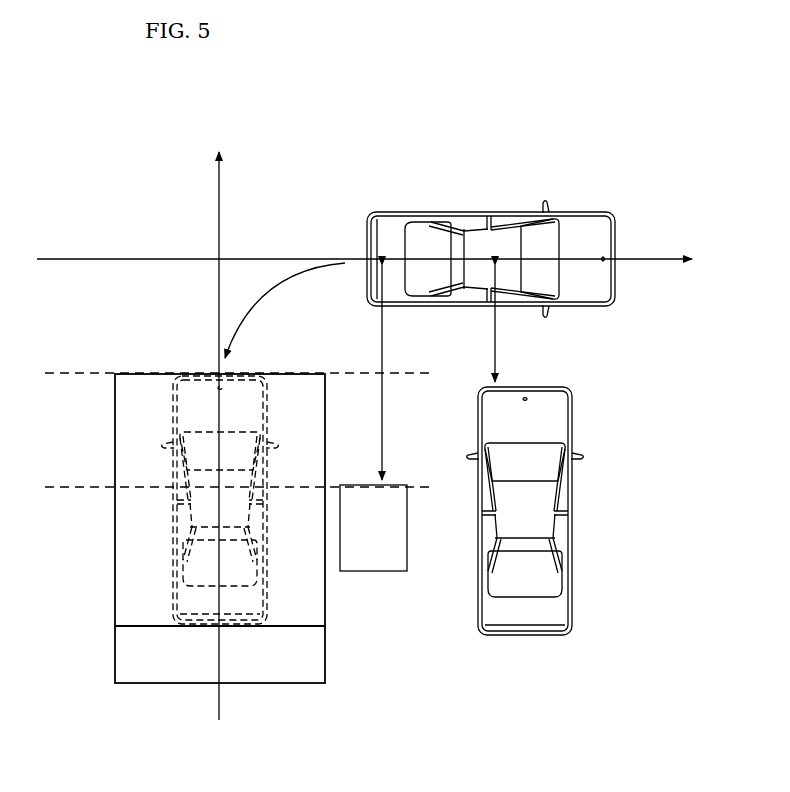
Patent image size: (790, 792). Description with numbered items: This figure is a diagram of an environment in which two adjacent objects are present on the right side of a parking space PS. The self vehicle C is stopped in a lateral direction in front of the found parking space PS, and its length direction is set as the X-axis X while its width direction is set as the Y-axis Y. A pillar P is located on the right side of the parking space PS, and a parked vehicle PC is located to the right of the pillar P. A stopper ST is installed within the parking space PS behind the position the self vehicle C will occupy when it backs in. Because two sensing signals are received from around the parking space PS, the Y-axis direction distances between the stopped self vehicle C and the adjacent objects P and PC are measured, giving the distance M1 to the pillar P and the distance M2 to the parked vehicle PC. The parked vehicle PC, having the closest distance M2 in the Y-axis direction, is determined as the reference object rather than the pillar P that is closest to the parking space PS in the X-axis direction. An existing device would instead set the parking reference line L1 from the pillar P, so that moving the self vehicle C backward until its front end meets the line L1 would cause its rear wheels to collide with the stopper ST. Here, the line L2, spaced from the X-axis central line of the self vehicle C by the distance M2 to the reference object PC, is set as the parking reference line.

The self vehicle C is at (570, 212).
The parking space PS is at (308, 371).
The stopper ST is at (140, 627).
The parking reference line L1 is at (83, 490).
The parking reference line L2 is at (67, 371).
The pillar P is at (372, 573).
The parked vehicle PC is at (520, 384).
The Y-axis direction distance M1 is at (397, 372).
The Y-axis direction distance M2 is at (478, 323).
The X-axis X is at (371, 274).
The Y-axis Y is at (231, 434).